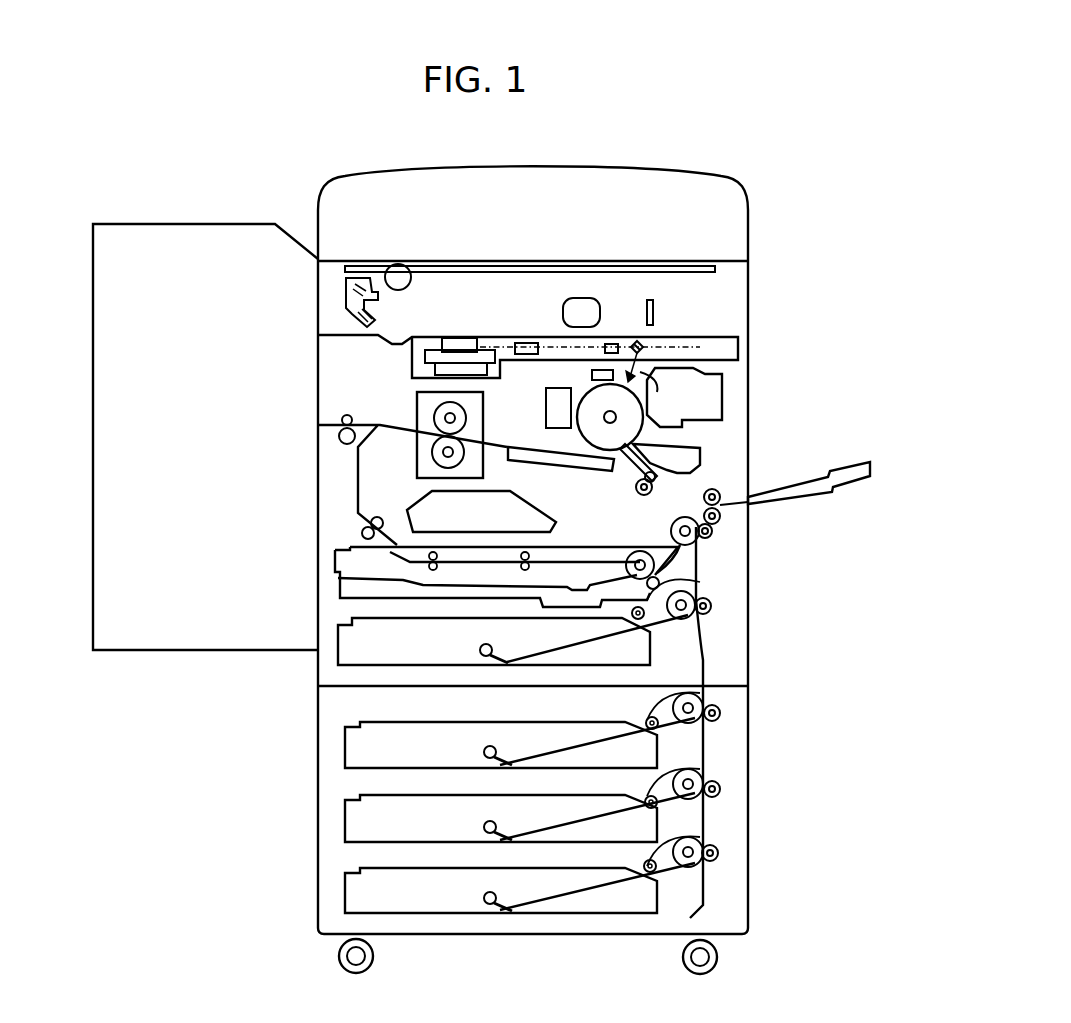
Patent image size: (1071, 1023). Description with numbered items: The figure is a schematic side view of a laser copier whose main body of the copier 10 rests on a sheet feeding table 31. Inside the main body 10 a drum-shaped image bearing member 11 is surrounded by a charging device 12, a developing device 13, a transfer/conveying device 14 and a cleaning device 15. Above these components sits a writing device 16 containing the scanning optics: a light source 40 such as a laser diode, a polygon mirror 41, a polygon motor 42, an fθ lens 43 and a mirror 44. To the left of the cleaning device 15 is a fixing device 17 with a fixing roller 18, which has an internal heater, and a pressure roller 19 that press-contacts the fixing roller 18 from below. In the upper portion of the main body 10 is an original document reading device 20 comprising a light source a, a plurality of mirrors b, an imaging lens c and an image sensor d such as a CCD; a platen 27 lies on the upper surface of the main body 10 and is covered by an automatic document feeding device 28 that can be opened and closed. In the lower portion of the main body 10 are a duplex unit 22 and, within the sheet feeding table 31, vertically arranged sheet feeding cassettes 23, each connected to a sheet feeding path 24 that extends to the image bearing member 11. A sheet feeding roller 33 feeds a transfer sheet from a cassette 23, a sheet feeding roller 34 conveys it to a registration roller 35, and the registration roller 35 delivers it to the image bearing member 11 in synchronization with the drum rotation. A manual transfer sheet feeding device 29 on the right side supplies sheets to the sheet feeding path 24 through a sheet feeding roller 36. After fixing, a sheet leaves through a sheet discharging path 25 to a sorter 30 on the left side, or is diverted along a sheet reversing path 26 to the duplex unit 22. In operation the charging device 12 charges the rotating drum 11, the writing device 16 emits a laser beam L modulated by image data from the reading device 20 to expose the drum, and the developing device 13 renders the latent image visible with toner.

The main body of a copier 10 is at (760, 575).
The image bearing member 11 is at (590, 372).
The charging device 12 is at (585, 395).
The developing device 13 is at (716, 396).
The transfer/conveying device 14 is at (580, 471).
The cleaning device 15 is at (546, 405).
The writing device 16 is at (743, 354).
The fixing device 17 is at (482, 457).
The fixing roller 18 is at (438, 412).
The pressure roller 19 is at (437, 452).
The original document reading device 20 is at (726, 302).
The duplex unit 22 is at (350, 566).
The sheet feeding cassettes 23 is at (350, 636).
The sheet feeding path 24 is at (700, 654).
The sheet discharging path 25 is at (345, 400).
The sheet reversing path 26 is at (350, 470).
The platen 27 is at (468, 267).
The automatic document feeding device 28 is at (731, 234).
The manual transfer sheet feeding device 29 is at (856, 468).
The sorter 30 is at (104, 398).
The sheet feeding table 31 is at (764, 838).
The sheet feeding roller 33 is at (698, 583).
The sheet feeding roller 34 is at (712, 533).
The registration roller 35 is at (642, 494).
The sheet feeding roller 36 is at (748, 470).
The light source 40 is at (527, 344).
The polygon mirror 41 is at (465, 345).
The polygon motor 42 is at (435, 370).
The fθ lens 43 is at (612, 344).
The mirror 44 is at (644, 345).
The light source a is at (398, 290).
The mirrors b is at (345, 320).
The imaging lens c is at (583, 298).
The image sensor d is at (650, 300).
The laser beam L is at (650, 382).